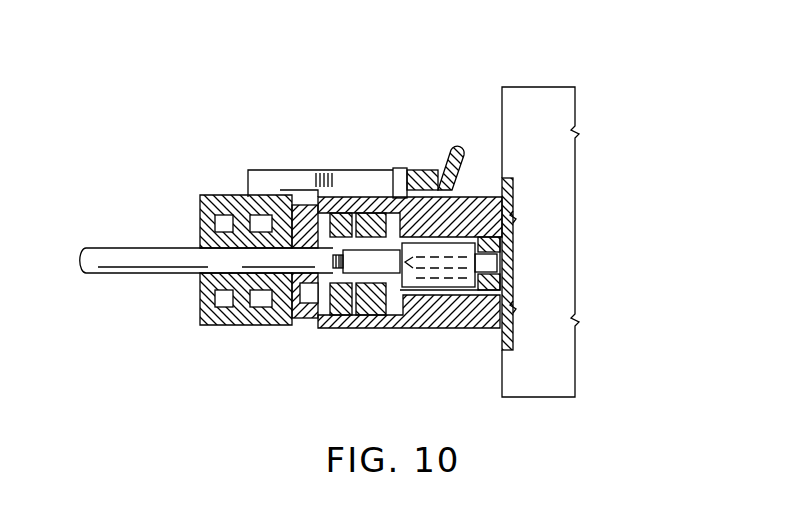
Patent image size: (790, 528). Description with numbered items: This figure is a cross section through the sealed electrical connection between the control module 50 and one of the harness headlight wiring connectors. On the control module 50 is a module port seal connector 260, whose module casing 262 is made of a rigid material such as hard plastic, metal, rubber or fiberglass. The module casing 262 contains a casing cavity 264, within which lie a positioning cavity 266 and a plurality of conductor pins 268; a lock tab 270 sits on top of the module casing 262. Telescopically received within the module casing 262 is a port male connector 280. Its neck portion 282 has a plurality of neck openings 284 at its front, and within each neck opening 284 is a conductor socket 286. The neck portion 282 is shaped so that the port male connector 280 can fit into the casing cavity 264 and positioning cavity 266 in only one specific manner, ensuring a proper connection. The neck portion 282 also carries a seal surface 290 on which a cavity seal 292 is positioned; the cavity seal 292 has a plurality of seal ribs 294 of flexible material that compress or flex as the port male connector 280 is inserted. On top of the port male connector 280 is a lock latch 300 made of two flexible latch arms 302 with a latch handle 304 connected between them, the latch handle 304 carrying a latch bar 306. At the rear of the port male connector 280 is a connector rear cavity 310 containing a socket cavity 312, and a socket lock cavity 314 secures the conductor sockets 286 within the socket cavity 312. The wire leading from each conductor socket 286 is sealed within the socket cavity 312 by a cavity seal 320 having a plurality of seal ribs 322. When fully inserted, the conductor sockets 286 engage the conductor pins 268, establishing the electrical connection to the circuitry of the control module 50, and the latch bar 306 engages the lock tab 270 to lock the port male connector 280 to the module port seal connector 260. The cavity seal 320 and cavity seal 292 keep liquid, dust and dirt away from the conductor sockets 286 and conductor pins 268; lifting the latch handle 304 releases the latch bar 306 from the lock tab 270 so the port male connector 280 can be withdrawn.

The control module 50 is at (568, 103).
The module port seal connector 260 is at (485, 188).
The module casing 262 is at (483, 191).
The casing cavity 264 is at (368, 305).
The positioning cavity 266 is at (497, 300).
The conductor pins 268 is at (497, 263).
The lock tab 270 is at (388, 188).
The port male connector 280 is at (187, 183).
The neck portion 282 is at (332, 307).
The neck openings 284 is at (493, 250).
The conductor socket 286 is at (428, 278).
The seal surface 290 is at (390, 182).
The cavity seal 292 is at (352, 200).
The seal ribs 294 is at (317, 313).
The lock latch 300 is at (457, 134).
The flexible latch arms 302 is at (287, 170).
The latch handle 304 is at (452, 138).
The latch bar 306 is at (425, 175).
The connector rear cavity 310 is at (232, 220).
The socket cavity 312 is at (330, 200).
The socket lock cavity 314 is at (370, 307).
The cavity seal 320 is at (203, 275).
The seal ribs 322 is at (257, 307).